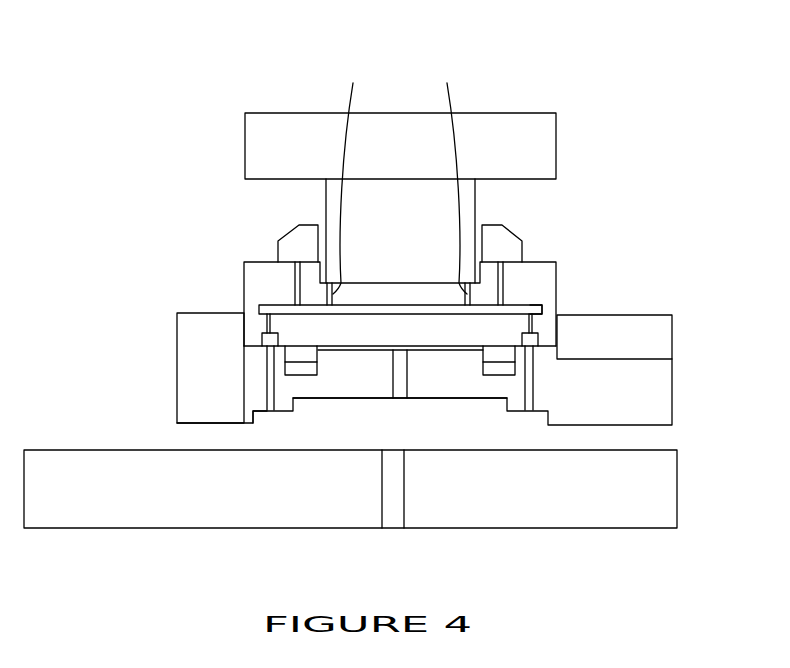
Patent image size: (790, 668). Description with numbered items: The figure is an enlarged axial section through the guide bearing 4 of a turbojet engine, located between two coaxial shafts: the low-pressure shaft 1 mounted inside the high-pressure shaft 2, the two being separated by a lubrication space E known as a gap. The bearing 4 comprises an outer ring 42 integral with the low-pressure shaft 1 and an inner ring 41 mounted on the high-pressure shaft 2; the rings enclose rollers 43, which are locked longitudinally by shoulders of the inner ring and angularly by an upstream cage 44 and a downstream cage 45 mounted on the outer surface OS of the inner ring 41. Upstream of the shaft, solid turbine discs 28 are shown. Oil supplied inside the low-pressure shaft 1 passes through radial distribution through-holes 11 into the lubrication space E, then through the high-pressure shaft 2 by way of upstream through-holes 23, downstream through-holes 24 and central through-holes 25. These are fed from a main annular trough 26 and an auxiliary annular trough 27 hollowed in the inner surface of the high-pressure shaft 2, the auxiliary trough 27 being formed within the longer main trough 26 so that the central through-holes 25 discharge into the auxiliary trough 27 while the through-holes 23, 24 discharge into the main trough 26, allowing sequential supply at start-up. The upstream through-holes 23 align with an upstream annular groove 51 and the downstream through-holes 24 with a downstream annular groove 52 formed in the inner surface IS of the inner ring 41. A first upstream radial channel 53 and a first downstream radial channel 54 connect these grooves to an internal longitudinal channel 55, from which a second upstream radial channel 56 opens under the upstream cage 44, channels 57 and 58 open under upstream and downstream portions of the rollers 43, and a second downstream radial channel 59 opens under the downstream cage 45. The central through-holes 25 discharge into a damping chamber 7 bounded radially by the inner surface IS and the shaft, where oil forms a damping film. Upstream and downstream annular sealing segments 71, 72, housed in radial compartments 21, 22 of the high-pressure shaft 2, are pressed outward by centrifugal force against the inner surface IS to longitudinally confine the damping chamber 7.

The low-pressure shaft 1 is at (147, 502).
The high-pressure shaft 2 is at (598, 410).
The guide bearing 4 is at (648, 257).
The damping chamber 7 is at (443, 348).
The radial distribution through-holes 11 is at (404, 493).
The upstream radial compartment 21 is at (300, 368).
The downstream radial compartment 22 is at (498, 355).
The upstream radial through-holes 23 is at (270, 398).
The downstream radial through-holes 24 is at (530, 400).
The central radial through-holes 25 is at (406, 380).
The main annular trough 26 is at (255, 413).
The auxiliary annular trough 27 is at (293, 402).
The turbine discs 28 is at (653, 325).
The inner ring 41 is at (557, 298).
The outer ring 42 is at (542, 145).
The rollers 43 is at (470, 207).
The upstream annular cage 44 is at (300, 243).
The downstream annular cage 45 is at (503, 243).
The upstream annular groove 51 is at (262, 342).
The downstream annular groove 52 is at (528, 342).
The first upstream radial channel 53 is at (268, 318).
The first downstream radial channel 54 is at (536, 306).
The internal longitudinal channel 55 is at (259, 310).
The second upstream radial channel for lubricating the cage 56 is at (295, 283).
The second upstream radial channel for lubricating the roller 57 is at (352, 176).
The second downstream radial channel for lubricating the roller 58 is at (451, 176).
The second downstream radial channel for lubricating the cage 59 is at (503, 287).
The upstream annular sealing segment 71 is at (298, 355).
The downstream annular sealing segment 72 is at (500, 368).
The outer surface of the inner ring OS is at (280, 305).
The inner surface of the inner ring IS is at (250, 346).
The lubrication space E is at (203, 449).